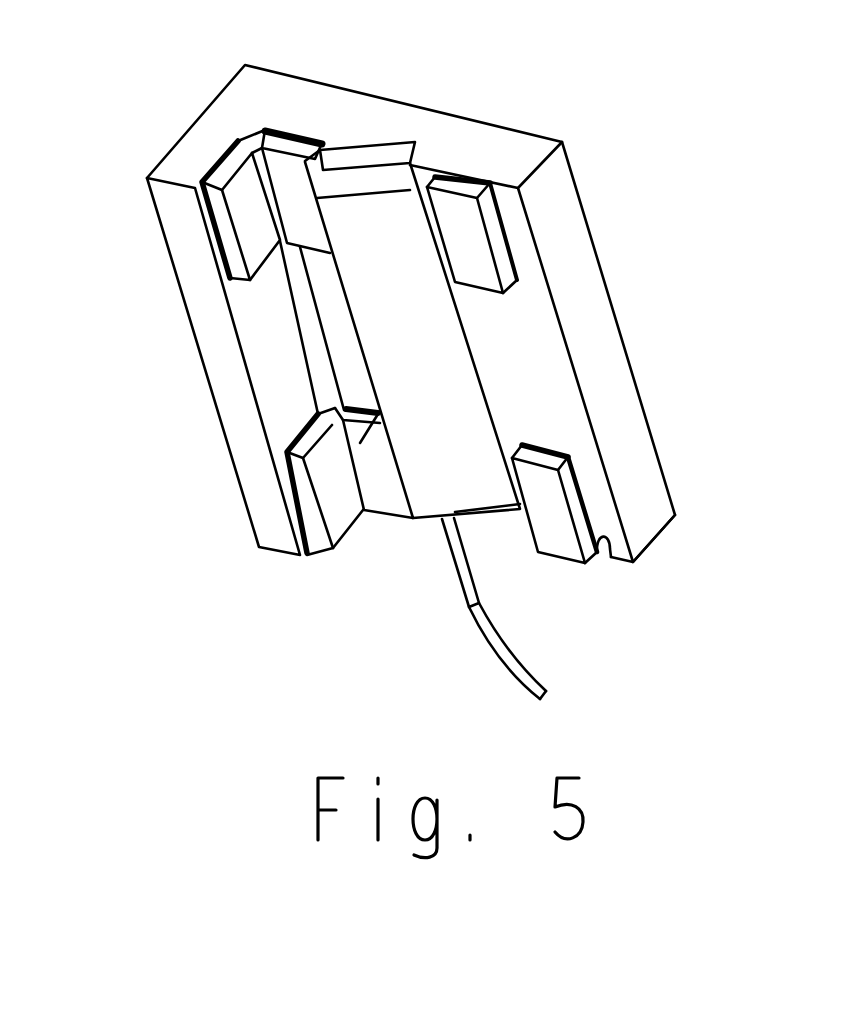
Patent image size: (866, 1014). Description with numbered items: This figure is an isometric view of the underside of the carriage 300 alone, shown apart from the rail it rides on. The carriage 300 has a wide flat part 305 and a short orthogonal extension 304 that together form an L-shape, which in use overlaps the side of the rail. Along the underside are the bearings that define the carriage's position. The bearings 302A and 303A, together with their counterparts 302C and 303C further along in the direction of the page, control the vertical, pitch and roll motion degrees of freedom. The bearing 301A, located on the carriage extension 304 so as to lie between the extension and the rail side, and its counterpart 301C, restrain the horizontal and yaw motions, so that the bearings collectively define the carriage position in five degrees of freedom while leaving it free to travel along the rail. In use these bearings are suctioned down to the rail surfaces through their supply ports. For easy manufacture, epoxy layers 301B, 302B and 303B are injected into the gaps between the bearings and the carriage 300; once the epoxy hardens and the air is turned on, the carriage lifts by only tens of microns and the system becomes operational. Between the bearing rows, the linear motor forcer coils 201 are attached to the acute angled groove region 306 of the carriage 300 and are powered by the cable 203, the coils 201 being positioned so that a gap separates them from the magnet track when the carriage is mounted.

The carriage 300 is at (757, 343).
The short orthogonal extension 304 is at (218, 360).
The wide flat part 305 is at (697, 437).
The acute angled groove region 306 is at (355, 152).
The linear motor forcer coils 201 is at (423, 490).
The cable 203 is at (510, 672).
The bearing 301A is at (330, 477).
The epoxy layer 301B is at (298, 543).
The bearing 301C is at (247, 186).
The bearing 302A is at (378, 413).
The epoxy layer 302B is at (345, 410).
The bearing 302C is at (283, 166).
The bearing 303A is at (550, 498).
The epoxy layer 303B is at (640, 678).
The bearing 303C is at (463, 218).